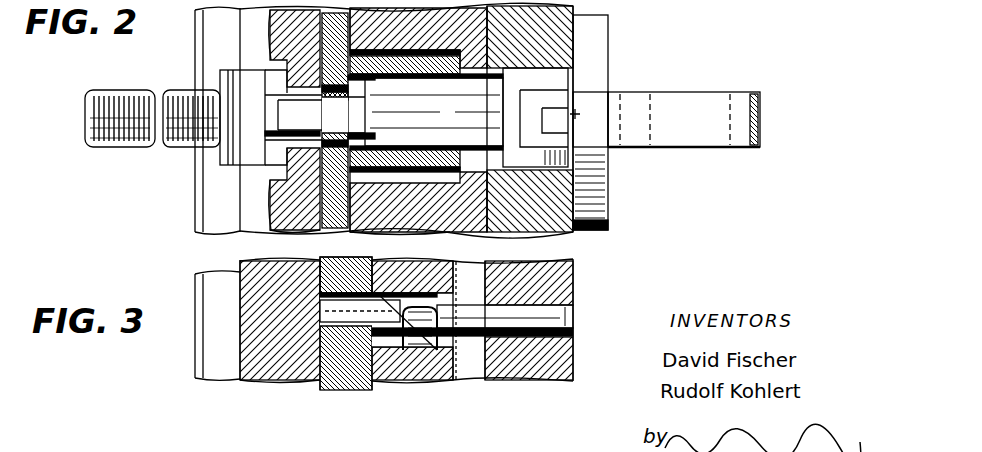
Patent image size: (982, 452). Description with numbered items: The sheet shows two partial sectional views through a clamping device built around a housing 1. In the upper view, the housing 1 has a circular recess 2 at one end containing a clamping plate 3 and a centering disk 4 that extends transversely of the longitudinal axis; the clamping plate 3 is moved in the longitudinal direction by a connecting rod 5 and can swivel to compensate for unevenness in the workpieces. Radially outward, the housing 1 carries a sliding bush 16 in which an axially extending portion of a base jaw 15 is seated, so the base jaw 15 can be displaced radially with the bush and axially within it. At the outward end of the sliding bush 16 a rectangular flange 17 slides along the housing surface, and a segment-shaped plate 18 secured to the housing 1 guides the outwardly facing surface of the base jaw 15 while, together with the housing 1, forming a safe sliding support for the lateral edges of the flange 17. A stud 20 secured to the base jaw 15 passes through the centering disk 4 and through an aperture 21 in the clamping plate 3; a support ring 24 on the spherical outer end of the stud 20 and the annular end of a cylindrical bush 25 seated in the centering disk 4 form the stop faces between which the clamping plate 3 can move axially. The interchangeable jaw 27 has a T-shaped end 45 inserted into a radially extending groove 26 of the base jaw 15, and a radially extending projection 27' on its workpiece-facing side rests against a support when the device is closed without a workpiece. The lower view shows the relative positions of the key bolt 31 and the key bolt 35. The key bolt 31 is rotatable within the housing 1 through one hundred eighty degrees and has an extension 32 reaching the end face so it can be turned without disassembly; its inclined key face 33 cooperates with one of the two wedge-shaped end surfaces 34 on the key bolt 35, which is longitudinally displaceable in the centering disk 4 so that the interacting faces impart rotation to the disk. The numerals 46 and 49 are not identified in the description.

In FIG. 2, the housing 1 is at (405, 223).
In FIG. 3, the housing 1 is at (452, 372).
In FIG. 2, the circular recess 2 is at (208, 172).
In FIG. 3, the circular recess 2 is at (212, 293).
In FIG. 2, the clamping plate 3 is at (277, 222).
In FIG. 3, the clamping plate 3 is at (262, 372).
In FIG. 2, the centering disk 4 is at (350, 35).
In FIG. 3, the centering disk 4 is at (340, 384).
In FIG. 2, the connecting rod 5 is at (86, 119).
In FIG. 2, the base jaw 15 is at (498, 176).
In FIG. 2, the sliding bush 16 is at (421, 56).
In FIG. 2, the rectangular flange 17 is at (488, 38).
In FIG. 3, the segment-shaped plate 18 is at (562, 261).
In FIG. 2, the stud 20 is at (296, 168).
In FIG. 2, the aperture 21 is at (302, 66).
In FIG. 2, the support ring 24 is at (222, 80).
In FIG. 2, the cylindrical bush 25 is at (410, 200).
In FIG. 2, the radially extending groove 26 is at (523, 90).
In FIG. 2, the interchangeable jaw 27 is at (684, 102).
In FIG. 2, the radially extending projection 27' is at (684, 166).
In FIG. 3, the key bolt 31 is at (378, 386).
In FIG. 3, the extension 32 is at (552, 308).
In FIG. 3, the key face 33 is at (486, 273).
In FIG. 3, the wedge-shaped end surface 34 is at (346, 275).
In FIG. 3, the key bolt 35 is at (320, 307).
In FIG. 2, the T-shaped end 45 is at (543, 117).
In FIG. 3, the latch hook 46 is at (408, 386).
In FIG. 2, the end cap 49 is at (592, 34).